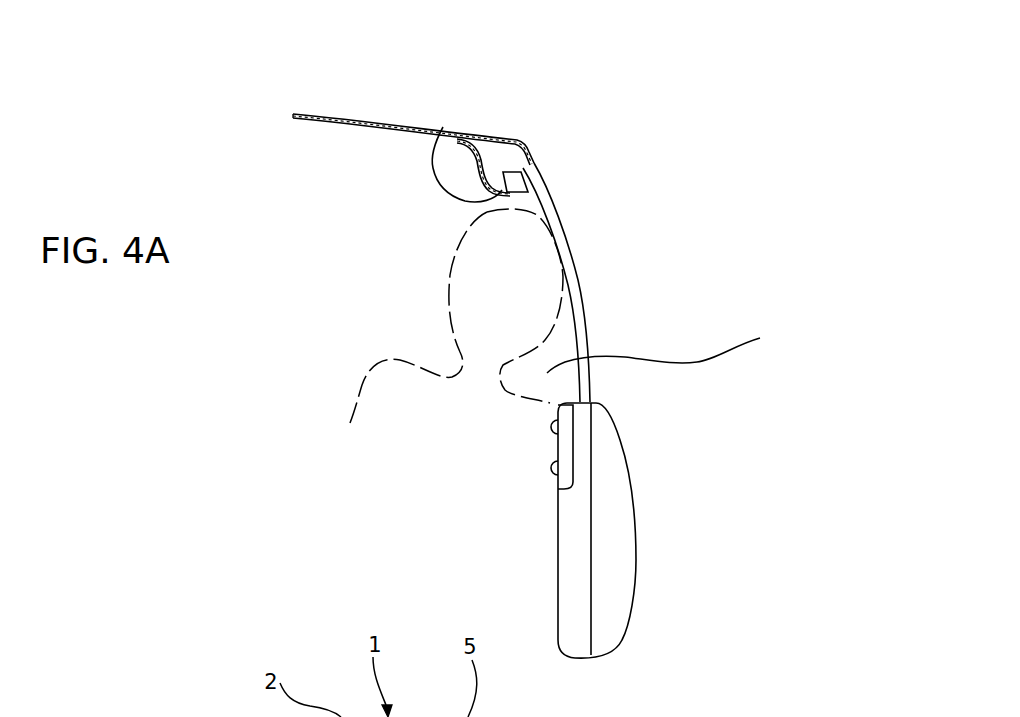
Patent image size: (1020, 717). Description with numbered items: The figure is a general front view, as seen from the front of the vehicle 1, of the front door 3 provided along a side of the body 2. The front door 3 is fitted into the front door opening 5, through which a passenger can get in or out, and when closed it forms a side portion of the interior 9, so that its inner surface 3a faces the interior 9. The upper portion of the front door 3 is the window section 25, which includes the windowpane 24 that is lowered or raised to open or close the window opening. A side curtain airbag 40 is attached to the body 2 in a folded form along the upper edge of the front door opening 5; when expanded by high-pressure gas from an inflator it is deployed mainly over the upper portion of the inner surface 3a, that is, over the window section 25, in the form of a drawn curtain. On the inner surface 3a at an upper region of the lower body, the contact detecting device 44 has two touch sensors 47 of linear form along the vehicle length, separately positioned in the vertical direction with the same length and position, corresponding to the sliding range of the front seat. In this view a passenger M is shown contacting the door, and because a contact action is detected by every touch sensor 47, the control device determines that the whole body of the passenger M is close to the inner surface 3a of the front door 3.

The vehicle 1 is at (388, 108).
The body 2 is at (345, 115).
The front door 3 is at (647, 540).
The inner surface 3a is at (558, 607).
The front door opening 5 is at (443, 127).
The interior 9 is at (661, 348).
The windowpane 24 is at (583, 298).
The window section 25 is at (557, 208).
The side curtain airbag 40 is at (507, 172).
The contact detecting device 44 is at (557, 450).
The touch sensors 47 is at (552, 427).
The passenger M is at (447, 284).